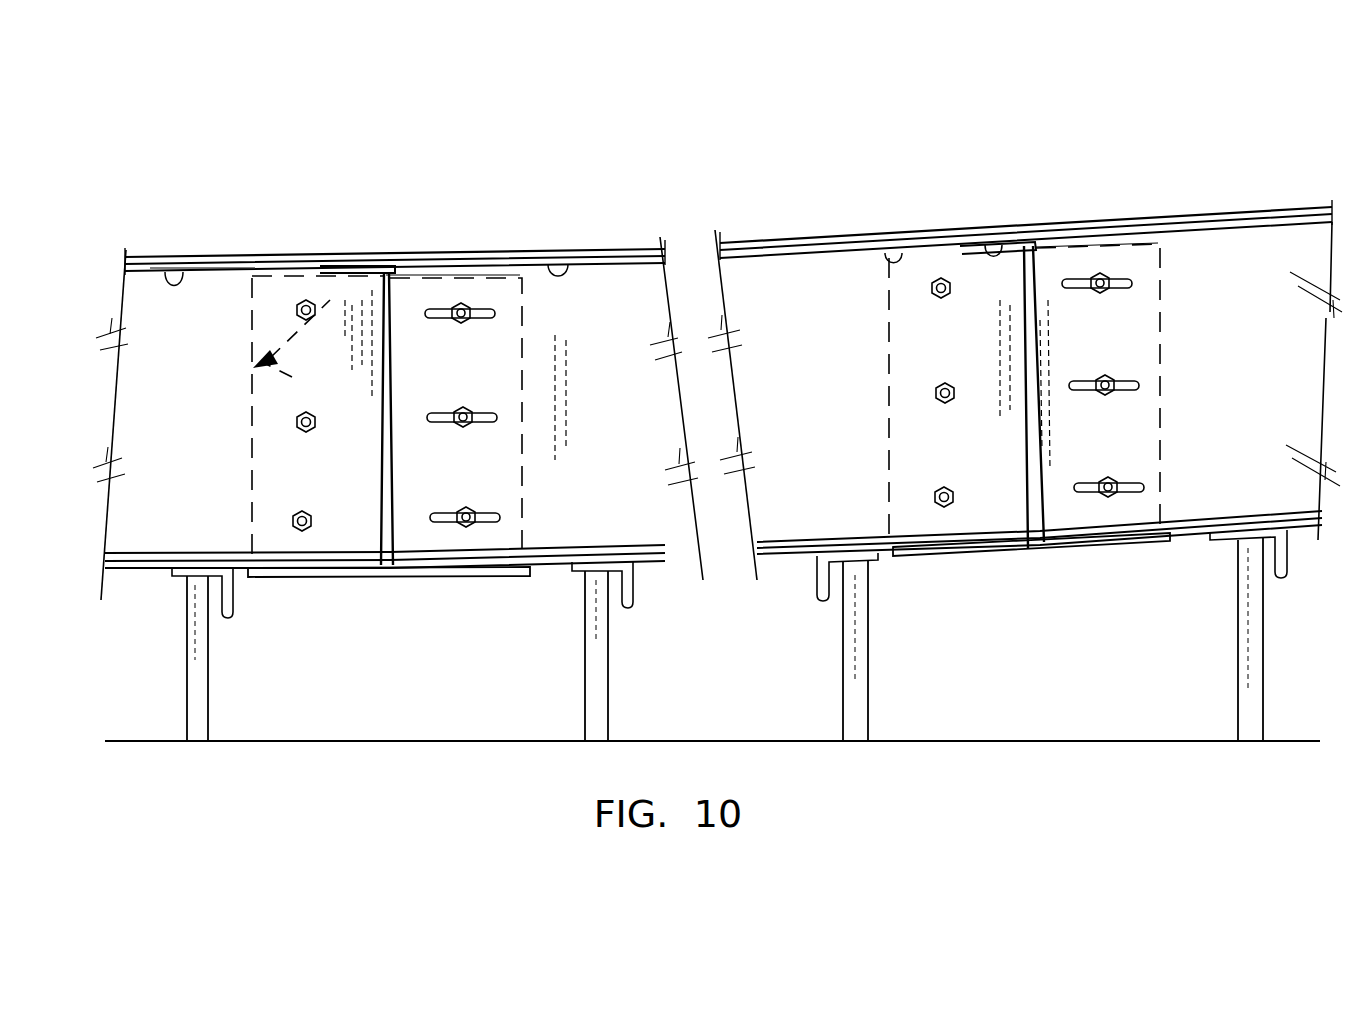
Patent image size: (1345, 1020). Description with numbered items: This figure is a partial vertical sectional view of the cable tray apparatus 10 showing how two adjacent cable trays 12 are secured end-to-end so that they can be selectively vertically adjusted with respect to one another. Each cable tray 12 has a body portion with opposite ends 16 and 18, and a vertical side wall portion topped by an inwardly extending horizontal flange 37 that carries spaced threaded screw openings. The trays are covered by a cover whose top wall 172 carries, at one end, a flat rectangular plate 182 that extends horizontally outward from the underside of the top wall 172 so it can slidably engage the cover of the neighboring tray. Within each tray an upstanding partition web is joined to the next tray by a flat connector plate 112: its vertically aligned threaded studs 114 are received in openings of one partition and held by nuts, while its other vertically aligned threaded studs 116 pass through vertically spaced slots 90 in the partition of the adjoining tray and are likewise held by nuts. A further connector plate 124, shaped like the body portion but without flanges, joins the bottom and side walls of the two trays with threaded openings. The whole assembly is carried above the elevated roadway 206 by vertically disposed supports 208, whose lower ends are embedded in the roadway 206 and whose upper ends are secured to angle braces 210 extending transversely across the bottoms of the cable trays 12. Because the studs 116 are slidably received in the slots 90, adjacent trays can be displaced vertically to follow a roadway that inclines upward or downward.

The cable tray apparatus 10 is at (633, 180).
The cable tray 12 is at (203, 285).
The end 16 is at (383, 458).
The end 18 is at (395, 470).
The flange 37 is at (168, 268).
The slots 90 is at (440, 318).
The connector plate 112 is at (362, 262).
The threaded studs 114 is at (305, 300).
The threaded studs 116 is at (459, 305).
The connector plate 124 is at (432, 592).
The top wall 172 is at (621, 248).
The flat rectangular plate 182 is at (414, 270).
The roadway 206 is at (995, 775).
The supports 208 is at (200, 683).
The angle braces 210 is at (228, 598).